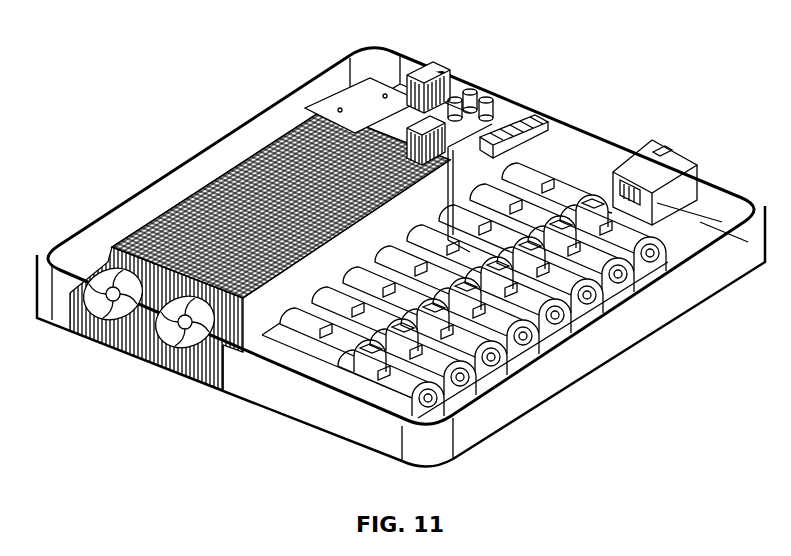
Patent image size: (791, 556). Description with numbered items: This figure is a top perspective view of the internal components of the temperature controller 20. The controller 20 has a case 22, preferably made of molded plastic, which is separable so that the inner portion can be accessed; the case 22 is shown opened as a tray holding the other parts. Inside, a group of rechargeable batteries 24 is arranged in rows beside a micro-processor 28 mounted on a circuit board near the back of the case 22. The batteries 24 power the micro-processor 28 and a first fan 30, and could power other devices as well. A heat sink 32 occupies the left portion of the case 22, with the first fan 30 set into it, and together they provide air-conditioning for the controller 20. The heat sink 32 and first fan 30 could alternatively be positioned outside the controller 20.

The controller 20 is at (390, 235).
The case 22 is at (620, 357).
The rechargeable battery 24 is at (385, 370).
The micro-processor 28 is at (490, 135).
The first fan 30 is at (115, 275).
The heat sink 32 is at (228, 175).